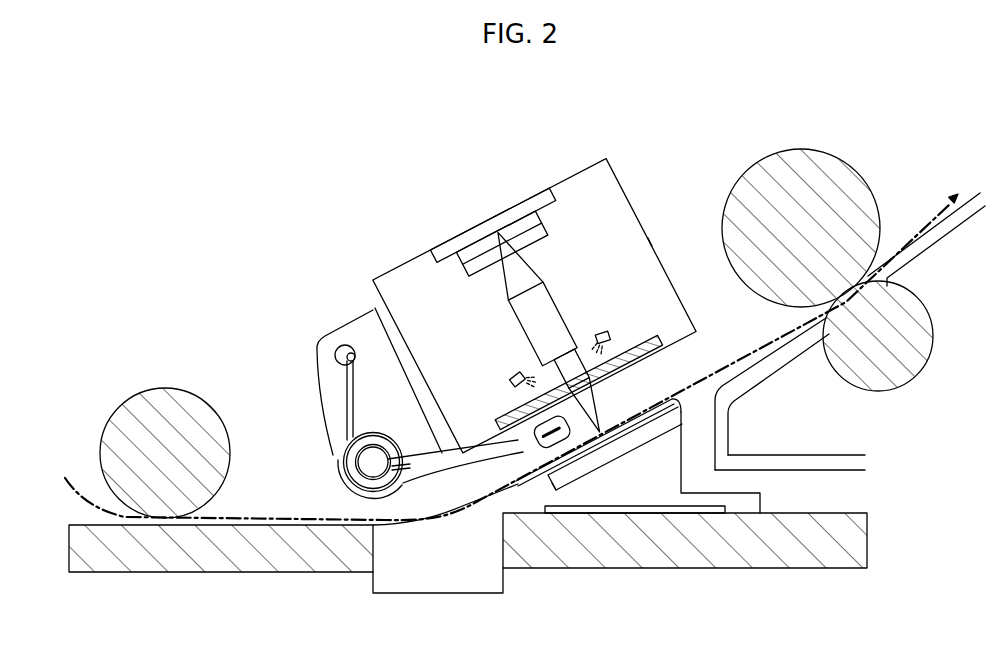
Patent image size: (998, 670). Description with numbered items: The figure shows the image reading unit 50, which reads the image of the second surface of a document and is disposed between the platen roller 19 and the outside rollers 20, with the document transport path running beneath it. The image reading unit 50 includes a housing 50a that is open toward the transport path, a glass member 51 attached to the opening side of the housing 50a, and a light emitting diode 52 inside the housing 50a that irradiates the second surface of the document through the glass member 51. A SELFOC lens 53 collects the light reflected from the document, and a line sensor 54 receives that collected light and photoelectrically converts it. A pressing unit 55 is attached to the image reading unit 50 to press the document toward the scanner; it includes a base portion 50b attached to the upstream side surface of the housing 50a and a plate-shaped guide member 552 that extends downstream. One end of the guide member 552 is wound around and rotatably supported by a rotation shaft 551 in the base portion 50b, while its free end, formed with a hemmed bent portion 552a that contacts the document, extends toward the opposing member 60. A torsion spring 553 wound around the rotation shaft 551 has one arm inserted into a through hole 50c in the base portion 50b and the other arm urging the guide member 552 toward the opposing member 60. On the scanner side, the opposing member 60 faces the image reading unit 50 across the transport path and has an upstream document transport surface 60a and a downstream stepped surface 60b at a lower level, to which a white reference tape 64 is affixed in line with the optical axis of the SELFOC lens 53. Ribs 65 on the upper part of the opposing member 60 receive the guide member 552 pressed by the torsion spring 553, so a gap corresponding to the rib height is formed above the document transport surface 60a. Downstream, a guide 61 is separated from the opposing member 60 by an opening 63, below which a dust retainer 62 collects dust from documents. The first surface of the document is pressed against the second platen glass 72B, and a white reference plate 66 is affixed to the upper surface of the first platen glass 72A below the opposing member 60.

The platen roller 19 is at (157, 388).
The outside rollers 20 is at (760, 148).
The image reading unit 50 is at (537, 139).
The housing 50a is at (648, 238).
The base portion 50b is at (368, 330).
The through hole 50c is at (338, 348).
The glass member 51 is at (645, 348).
The light emitting diode (LED) 52 is at (605, 331).
The SELFOC lens 53 is at (558, 302).
The line sensor 54 is at (546, 213).
The pressing unit 55 is at (254, 299).
The rotation shaft 551 is at (370, 462).
The guide member 552 is at (437, 480).
The bent portion 552a is at (530, 455).
The torsion spring 553 is at (346, 380).
The opposing member 60 is at (387, 594).
The document transport surface 60a is at (420, 527).
The stepped surface 60b is at (626, 448).
The guide 61 is at (832, 455).
The dust retainer 62 is at (742, 495).
The opening 63 is at (730, 418).
The white reference tape 64 is at (565, 472).
The ribs 65 is at (658, 403).
The white reference plate 66 is at (668, 513).
The first platen glass 72A is at (832, 572).
The second platen glass 72B is at (115, 573).